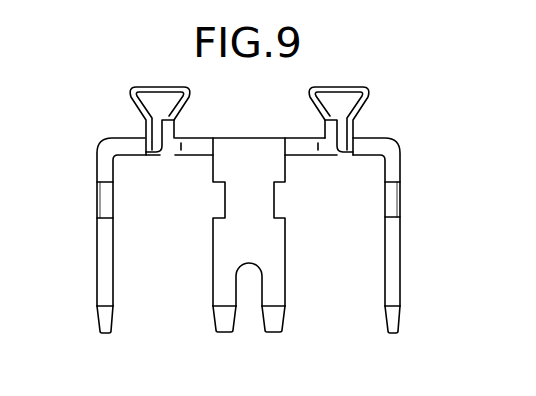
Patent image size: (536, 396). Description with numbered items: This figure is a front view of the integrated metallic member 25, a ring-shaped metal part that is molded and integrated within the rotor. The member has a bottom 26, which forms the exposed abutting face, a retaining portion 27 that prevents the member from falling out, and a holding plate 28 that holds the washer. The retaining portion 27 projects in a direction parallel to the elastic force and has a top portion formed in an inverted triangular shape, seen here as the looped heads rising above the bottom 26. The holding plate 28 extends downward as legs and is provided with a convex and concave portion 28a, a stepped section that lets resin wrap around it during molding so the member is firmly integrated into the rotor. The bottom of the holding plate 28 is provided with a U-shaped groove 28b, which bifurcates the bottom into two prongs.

The integrated metallic member 25 is at (448, 108).
The bottom 26 is at (198, 138).
The retaining portion 27 is at (346, 88).
The holding plate 28 is at (95, 272).
The convex and concave portion 28a is at (105, 203).
The U-shaped groove 28b is at (249, 290).